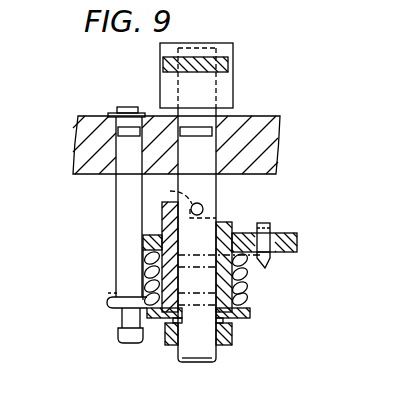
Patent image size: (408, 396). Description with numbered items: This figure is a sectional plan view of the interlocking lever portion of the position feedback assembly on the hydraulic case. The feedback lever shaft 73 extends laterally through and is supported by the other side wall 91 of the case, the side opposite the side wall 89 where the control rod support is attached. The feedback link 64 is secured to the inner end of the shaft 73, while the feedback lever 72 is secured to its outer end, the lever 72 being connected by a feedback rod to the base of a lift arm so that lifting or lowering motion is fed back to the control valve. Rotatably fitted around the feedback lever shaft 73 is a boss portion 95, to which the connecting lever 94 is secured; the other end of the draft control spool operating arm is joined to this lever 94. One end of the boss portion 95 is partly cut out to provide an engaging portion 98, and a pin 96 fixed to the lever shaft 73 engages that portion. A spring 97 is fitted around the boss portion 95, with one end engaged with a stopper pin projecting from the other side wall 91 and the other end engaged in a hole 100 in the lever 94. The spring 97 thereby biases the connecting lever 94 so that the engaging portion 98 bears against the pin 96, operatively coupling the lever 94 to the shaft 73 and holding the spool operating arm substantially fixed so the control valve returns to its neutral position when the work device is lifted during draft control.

The feedback link 64 is at (232, 340).
The feedback lever 72 is at (232, 45).
The feedback lever shaft 73 is at (205, 152).
The side wall 89 is at (133, 188).
The other side wall 91 is at (253, 122).
The connecting lever 94 is at (297, 243).
The boss portion 95 is at (160, 253).
The pin 96 is at (190, 211).
The spring 97 is at (246, 282).
The engaging portion 98 is at (181, 198).
The hole 100 is at (272, 232).